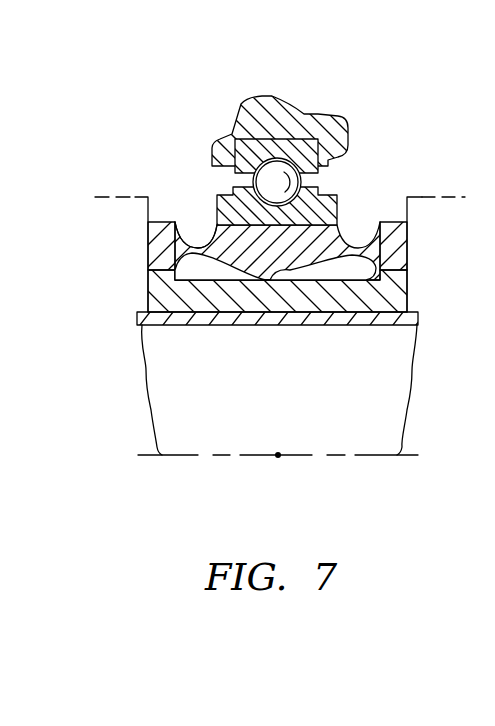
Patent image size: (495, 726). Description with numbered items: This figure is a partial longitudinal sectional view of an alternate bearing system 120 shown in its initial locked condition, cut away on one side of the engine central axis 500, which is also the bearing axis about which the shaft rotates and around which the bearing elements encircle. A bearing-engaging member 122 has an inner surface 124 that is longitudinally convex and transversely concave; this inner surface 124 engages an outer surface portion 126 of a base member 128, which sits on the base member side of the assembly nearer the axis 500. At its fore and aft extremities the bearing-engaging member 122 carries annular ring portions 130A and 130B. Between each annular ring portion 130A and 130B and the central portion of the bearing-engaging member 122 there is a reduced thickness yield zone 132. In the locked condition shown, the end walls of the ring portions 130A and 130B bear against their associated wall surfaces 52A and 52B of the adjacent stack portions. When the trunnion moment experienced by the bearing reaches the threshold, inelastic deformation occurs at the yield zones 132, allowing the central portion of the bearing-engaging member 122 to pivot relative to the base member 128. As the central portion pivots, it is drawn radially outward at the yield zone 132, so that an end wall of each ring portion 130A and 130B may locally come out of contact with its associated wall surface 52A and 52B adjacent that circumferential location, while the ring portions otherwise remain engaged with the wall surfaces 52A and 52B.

The bearing system 120 is at (394, 105).
The bearing-engaging member 122 is at (345, 233).
The inner surface 124 is at (318, 281).
The outer surface portion 126 is at (276, 281).
The base member 128 is at (190, 302).
The annular ring portion 130A is at (158, 239).
The annular ring portion 130B is at (400, 233).
The reduced thickness yield zone 132 is at (208, 238).
The wall surface 52A is at (150, 203).
The wall surface 52B is at (405, 203).
The central axis 500 is at (312, 455).